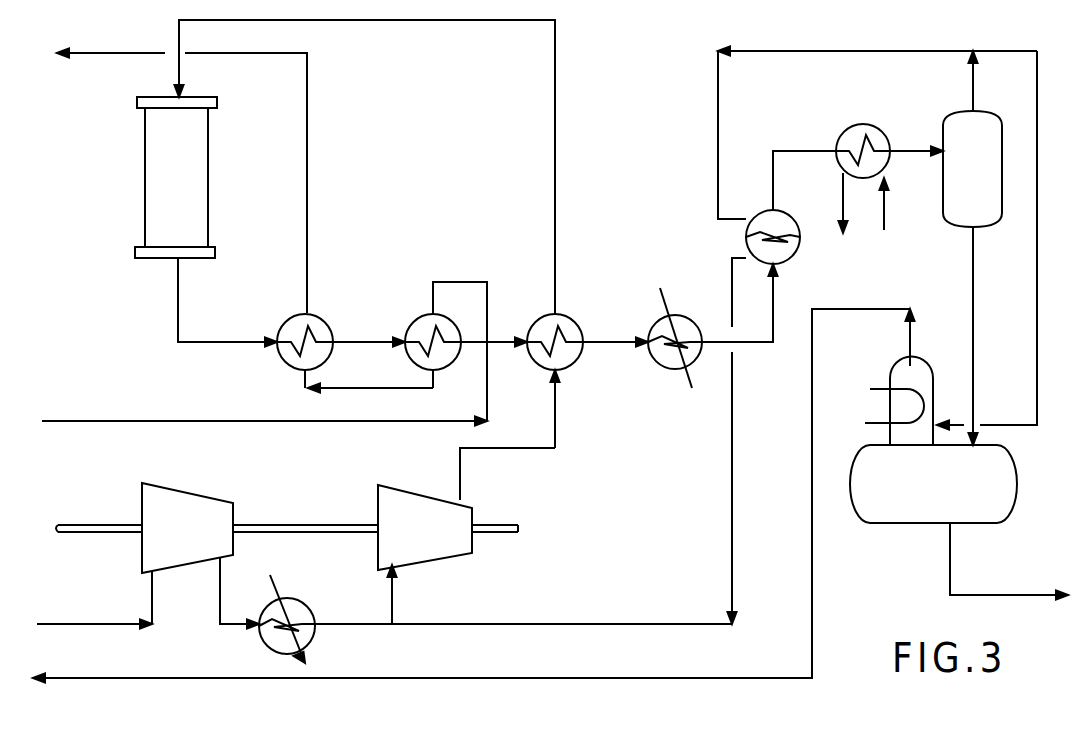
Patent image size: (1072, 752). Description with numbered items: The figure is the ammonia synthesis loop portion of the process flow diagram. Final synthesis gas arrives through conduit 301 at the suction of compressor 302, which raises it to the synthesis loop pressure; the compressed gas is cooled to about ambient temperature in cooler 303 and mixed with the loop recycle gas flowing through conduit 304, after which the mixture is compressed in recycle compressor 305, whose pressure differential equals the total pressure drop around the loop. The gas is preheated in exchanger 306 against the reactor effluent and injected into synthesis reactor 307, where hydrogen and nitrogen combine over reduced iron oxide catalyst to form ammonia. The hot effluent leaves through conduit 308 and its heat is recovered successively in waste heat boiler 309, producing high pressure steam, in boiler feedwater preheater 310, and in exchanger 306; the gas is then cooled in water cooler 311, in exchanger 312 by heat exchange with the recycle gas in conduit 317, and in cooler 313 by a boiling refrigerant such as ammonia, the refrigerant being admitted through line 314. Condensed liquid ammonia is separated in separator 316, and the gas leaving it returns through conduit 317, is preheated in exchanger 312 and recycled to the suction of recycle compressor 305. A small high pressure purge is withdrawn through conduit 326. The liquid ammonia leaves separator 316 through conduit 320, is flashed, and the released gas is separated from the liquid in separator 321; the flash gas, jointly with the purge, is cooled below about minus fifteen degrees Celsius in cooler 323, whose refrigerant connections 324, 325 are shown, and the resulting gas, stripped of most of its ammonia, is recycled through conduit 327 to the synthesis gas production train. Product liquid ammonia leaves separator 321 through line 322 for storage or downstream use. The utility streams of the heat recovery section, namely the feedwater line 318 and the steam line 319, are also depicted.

The conduit 301 is at (94, 600).
The compressor 302 is at (217, 528).
The cooler 303 is at (320, 600).
The conduit 304 is at (523, 597).
The recycle compressor 305 is at (466, 509).
The exchanger 306 is at (593, 310).
The synthesis reactor 307 is at (345, 167).
The conduit 308 is at (227, 302).
The waste heat boiler 309 is at (347, 311).
The boiler feedwater preheater 310 is at (407, 322).
The water cooler 311 is at (705, 311).
The exchanger 312 is at (800, 252).
The cooler 313 is at (840, 130).
The coolant inlet line 314 is at (896, 220).
The separator 316 is at (972, 169).
The conduit 317 is at (877, 123).
The inlet line 318 is at (264, 411).
The outlet line 319 is at (182, 172).
The conduit 320 is at (977, 300).
The separator 321 is at (943, 287).
The product outlet line 322 is at (1009, 561).
The cooler 323 is at (933, 378).
The coil inlet line 324 is at (883, 396).
The coil outlet line 325 is at (869, 417).
The conduit 326 is at (993, 69).
The conduit 327 is at (471, 496).